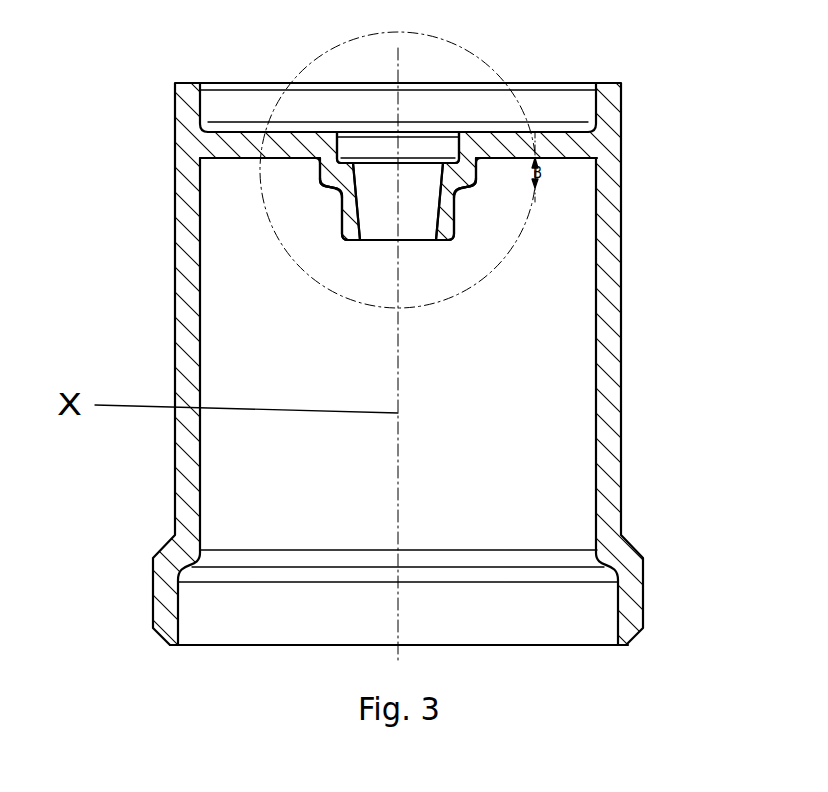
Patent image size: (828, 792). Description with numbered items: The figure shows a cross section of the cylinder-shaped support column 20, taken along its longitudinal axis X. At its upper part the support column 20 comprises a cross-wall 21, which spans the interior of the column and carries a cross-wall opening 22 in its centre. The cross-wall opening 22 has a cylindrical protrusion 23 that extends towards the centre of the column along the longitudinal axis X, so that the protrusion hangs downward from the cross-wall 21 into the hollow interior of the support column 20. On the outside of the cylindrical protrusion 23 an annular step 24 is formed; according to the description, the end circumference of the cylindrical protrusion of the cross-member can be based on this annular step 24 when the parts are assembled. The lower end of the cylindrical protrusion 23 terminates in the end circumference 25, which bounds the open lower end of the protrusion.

The support column 20 is at (185, 345).
The cross-wall of a support column 21 is at (522, 137).
The cross-wall opening 22 is at (385, 220).
The cylindrical protrusion of a cross-wall opening 23 is at (453, 203).
The annular step of a cylindrical protrusion 24 is at (475, 185).
The end circumference of a cylindrical protrusion 25 is at (455, 240).